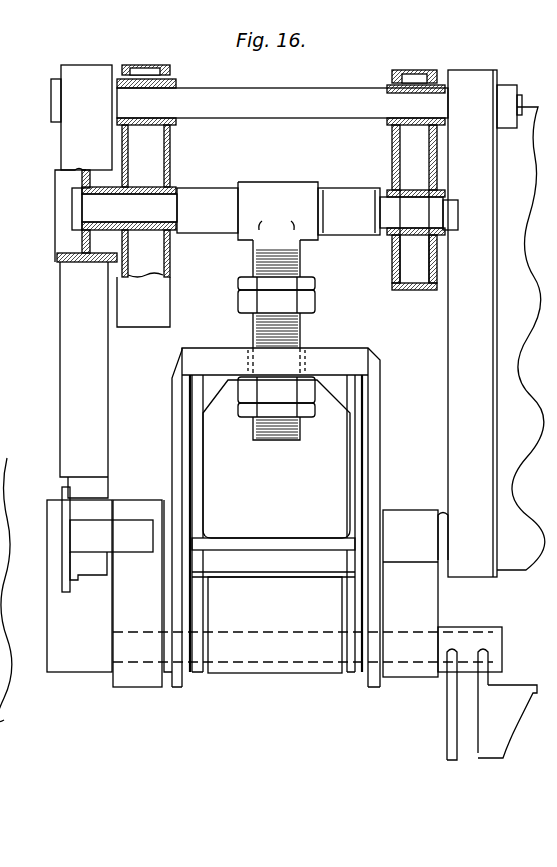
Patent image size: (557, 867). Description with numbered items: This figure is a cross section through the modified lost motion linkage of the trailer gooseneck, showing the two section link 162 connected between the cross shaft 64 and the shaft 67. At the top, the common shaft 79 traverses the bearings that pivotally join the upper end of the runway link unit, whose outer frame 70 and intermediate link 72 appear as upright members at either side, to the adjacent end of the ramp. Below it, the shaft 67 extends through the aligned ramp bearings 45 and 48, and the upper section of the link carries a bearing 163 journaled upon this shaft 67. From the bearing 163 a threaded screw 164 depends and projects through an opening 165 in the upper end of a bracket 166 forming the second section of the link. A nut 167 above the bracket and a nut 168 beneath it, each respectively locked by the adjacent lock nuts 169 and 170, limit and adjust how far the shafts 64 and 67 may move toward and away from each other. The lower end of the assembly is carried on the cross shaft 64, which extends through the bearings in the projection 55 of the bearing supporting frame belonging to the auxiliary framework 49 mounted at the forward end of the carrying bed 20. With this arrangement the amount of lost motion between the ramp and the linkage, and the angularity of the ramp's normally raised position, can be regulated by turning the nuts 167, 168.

The carrying bed 20 is at (6, 475).
The bearing 45 is at (90, 222).
The bearing 48 is at (418, 235).
The auxiliary framework 49 is at (73, 658).
The parallel projection 55 is at (305, 669).
The cross shaft 64 is at (233, 653).
The shaft 67 is at (163, 200).
The outer frame 70 is at (72, 387).
The intermediate link 72 is at (460, 408).
The common shaft 79 is at (272, 113).
The two section link 162 is at (385, 380).
The bearing 163 is at (340, 200).
The threaded screw 164 is at (293, 332).
The opening 165 is at (255, 360).
The bracket 166 is at (367, 440).
The nut 167 is at (313, 302).
The nut 168 is at (310, 392).
The lock nut 169 is at (307, 280).
The lock nut 170 is at (245, 413).